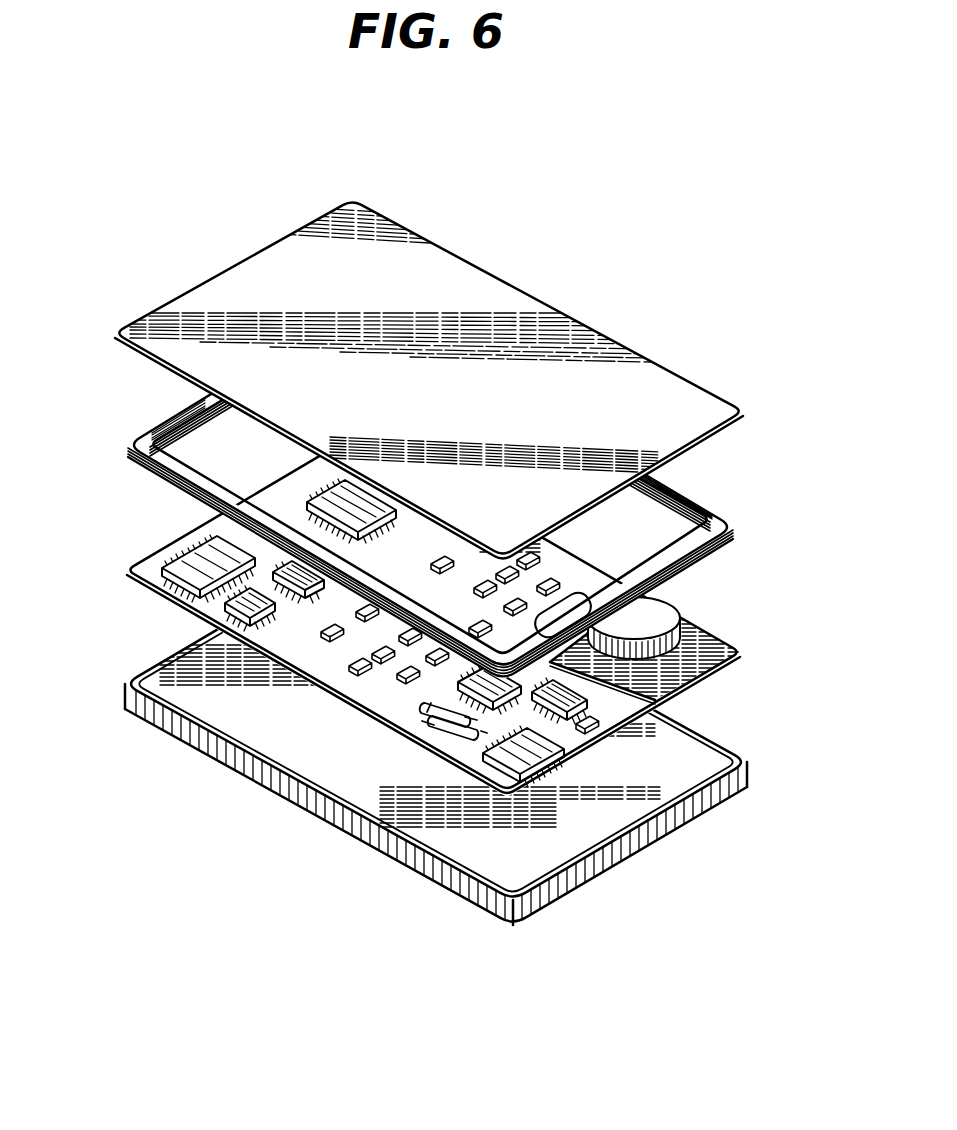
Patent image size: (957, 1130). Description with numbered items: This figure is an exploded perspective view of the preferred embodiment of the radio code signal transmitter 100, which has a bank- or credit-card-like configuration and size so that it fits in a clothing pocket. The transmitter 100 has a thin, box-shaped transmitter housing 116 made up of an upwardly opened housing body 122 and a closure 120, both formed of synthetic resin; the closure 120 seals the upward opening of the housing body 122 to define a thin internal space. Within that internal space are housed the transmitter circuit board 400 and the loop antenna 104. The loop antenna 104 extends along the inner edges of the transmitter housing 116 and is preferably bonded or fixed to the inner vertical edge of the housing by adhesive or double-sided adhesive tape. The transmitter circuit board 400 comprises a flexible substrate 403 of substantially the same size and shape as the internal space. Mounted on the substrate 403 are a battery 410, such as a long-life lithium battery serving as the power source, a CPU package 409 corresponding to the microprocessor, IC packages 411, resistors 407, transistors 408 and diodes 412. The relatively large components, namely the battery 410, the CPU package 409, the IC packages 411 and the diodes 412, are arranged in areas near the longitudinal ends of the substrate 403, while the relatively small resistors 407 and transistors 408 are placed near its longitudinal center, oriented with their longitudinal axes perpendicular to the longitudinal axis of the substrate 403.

The radio code signal transmitter 100 is at (558, 264).
The closure 120 is at (610, 368).
The loop antenna 104 is at (712, 508).
The CPU package 409 is at (362, 482).
The IC packages 411 is at (563, 712).
The battery 410 is at (655, 610).
The transmitter housing 116 is at (690, 763).
The housing body 122 is at (415, 863).
The resistors 407 is at (356, 672).
The transistors 408 is at (409, 680).
The transmitter circuit board 400 is at (268, 699).
The flexible substrate 403 is at (373, 705).
The diodes 412 is at (462, 737).